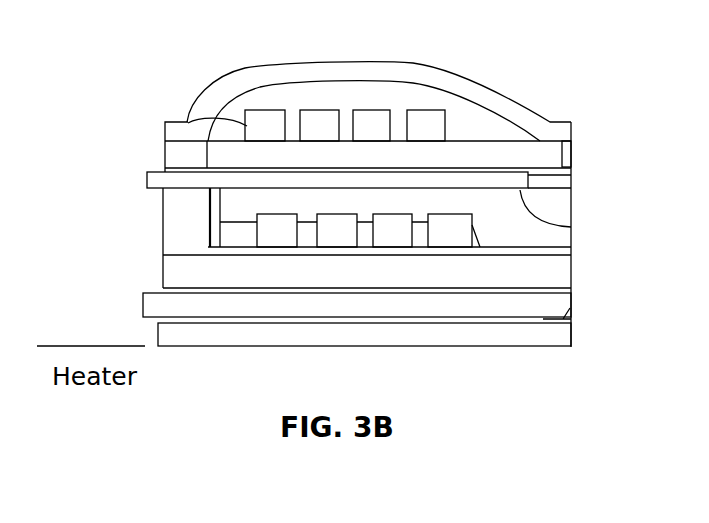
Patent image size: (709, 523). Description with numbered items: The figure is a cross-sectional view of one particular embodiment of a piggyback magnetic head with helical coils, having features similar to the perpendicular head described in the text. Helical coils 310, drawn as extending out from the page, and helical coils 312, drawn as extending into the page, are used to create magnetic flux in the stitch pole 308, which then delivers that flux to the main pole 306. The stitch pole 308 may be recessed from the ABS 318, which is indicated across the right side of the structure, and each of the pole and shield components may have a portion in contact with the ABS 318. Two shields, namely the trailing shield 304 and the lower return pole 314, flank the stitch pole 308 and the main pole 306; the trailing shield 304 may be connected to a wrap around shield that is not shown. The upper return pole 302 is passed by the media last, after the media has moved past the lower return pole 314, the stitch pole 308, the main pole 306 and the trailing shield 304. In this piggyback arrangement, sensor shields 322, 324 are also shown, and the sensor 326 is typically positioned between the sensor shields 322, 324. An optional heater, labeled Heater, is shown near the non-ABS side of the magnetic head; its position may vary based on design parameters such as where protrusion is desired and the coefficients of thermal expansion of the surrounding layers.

The upper return pole 302 is at (503, 93).
The trailing shield 304 is at (572, 155).
The main pole 306 is at (572, 182).
The stitch pole 308 is at (571, 227).
The helical coils 310 is at (187, 122).
The helical coils 312 is at (258, 212).
The lower return pole 314 is at (403, 281).
The ABS 318 is at (585, 261).
The sensor shield 322 is at (143, 304).
The sensor shield 324 is at (158, 333).
The sensor 326 is at (572, 307).